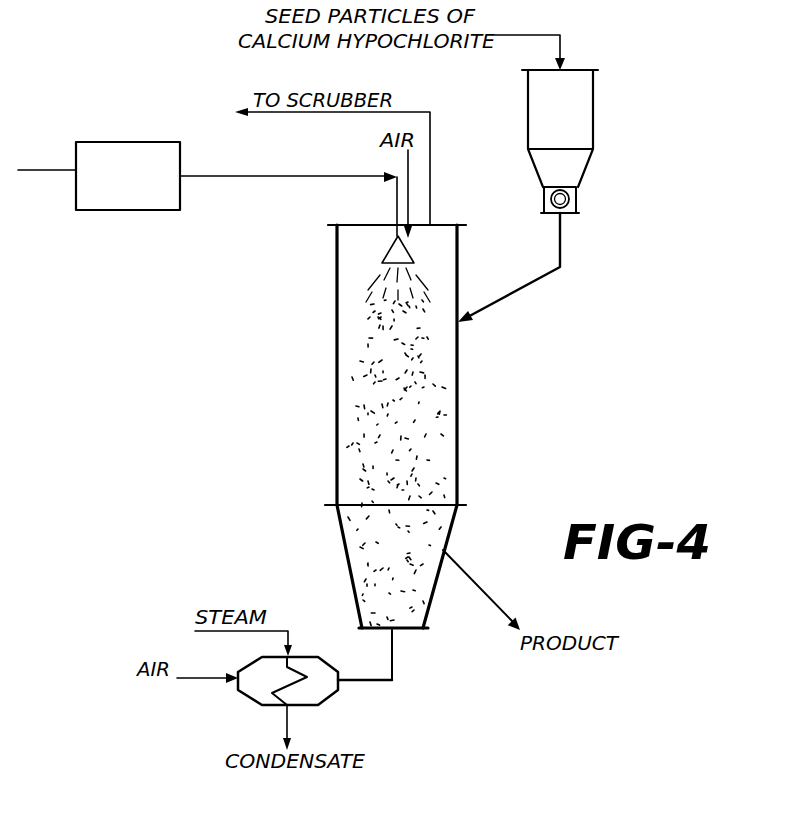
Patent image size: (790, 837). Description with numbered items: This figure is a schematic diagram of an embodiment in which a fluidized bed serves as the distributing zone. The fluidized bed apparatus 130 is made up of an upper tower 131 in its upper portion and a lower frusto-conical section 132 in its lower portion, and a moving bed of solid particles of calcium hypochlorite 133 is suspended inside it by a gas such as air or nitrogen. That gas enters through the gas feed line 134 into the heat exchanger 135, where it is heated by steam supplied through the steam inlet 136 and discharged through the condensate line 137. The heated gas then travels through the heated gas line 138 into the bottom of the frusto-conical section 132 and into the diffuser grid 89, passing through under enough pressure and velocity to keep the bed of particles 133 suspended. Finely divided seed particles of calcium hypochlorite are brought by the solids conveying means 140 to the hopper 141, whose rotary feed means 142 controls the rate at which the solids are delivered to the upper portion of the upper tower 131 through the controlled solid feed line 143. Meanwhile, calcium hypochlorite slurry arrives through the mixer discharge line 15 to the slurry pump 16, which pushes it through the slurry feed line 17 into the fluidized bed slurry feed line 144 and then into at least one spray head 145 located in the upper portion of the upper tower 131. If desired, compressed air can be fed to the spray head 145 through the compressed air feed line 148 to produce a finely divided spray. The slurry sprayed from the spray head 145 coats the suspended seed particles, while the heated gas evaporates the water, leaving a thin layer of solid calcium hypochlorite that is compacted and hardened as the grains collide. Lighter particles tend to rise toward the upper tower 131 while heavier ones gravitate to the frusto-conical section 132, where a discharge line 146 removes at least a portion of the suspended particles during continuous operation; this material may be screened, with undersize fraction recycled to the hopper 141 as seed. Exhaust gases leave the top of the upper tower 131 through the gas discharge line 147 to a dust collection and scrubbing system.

The mixer discharge line 15 is at (40, 168).
The slurry pump 16 is at (103, 212).
The slurry feed line 17 is at (257, 180).
The diffuser grid 89 is at (413, 630).
The fluidized bed apparatus 130 is at (395, 426).
The upper tower 131 is at (458, 402).
The lower frusto-conical section 132 is at (343, 540).
The moving bed of solid particles of calcium hypochlorite 133 is at (420, 452).
The gas feed line 134 is at (200, 677).
The heat exchanger 135 is at (323, 695).
The steam inlet 136 is at (290, 634).
The condensate line 137 is at (287, 722).
The heated gas line 138 is at (395, 673).
The solids conveying means 140 is at (535, 33).
The hopper 141 is at (593, 118).
The rotary feed means 142 is at (576, 195).
The controlled solid feed line 143 is at (518, 296).
The fluidized bed slurry feed line 144 is at (397, 202).
The spray head 145 is at (402, 252).
The discharge line 146 is at (477, 588).
The gas discharge line 147 is at (430, 131).
The compressed air feed line 148 is at (408, 168).